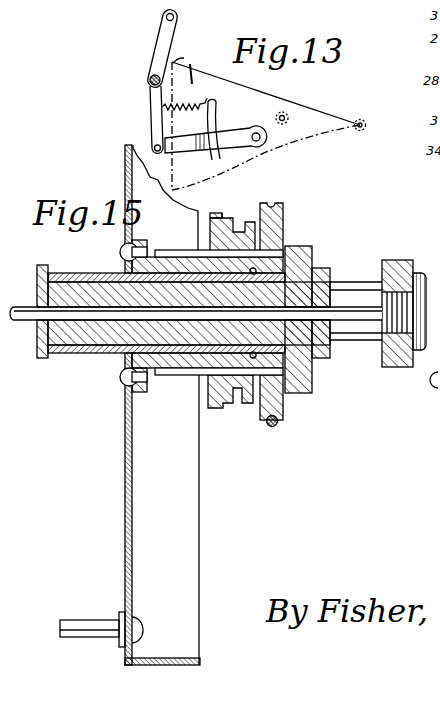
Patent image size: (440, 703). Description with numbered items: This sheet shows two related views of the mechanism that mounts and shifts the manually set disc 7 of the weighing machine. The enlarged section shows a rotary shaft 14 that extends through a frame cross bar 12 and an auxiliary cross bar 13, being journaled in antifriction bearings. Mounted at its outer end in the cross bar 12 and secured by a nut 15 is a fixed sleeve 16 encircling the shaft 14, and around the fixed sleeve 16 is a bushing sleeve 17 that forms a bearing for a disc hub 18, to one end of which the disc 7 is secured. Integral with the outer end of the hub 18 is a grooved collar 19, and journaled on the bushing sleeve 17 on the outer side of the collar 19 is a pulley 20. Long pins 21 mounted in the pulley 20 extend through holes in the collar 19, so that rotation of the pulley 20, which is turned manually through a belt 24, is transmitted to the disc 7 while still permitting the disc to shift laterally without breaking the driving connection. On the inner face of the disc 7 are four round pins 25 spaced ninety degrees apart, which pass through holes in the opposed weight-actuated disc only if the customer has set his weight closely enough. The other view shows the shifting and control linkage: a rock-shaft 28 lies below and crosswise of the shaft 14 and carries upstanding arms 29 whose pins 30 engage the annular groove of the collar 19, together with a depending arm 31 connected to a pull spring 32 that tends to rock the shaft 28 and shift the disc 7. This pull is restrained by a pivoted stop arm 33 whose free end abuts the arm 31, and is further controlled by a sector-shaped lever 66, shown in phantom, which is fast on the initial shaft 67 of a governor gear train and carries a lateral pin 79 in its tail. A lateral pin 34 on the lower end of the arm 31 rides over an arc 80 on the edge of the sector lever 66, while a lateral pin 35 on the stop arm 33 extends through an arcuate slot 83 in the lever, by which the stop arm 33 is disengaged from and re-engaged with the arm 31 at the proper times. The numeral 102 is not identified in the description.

In FIG. 15, the manually set disc 7 is at (125, 431).
In FIG. 15, the cross bar 12 is at (300, 255).
In FIG. 15, the auxiliary cross bar 13 is at (400, 262).
In FIG. 15, the rotary shaft 14 is at (17, 306).
In FIG. 15, the nut 15 is at (322, 270).
In FIG. 15, the fixed sleeve 16 is at (66, 290).
In FIG. 15, the bushing sleeve 17 is at (96, 276).
In FIG. 15, the disc hub 18 is at (163, 262).
In FIG. 15, the grooved collar 19 is at (230, 226).
In FIG. 15, the pulley 20 is at (284, 217).
In FIG. 15, the long pins 21 is at (190, 249).
In FIG. 15, the belt 24 is at (275, 426).
In FIG. 15, the round pins 25 is at (80, 622).
In FIG. 13, the rock-shaft 28 is at (149, 80).
In FIG. 13, the upstanding arms 29 is at (162, 41).
In FIG. 13, the pins 30 is at (164, 17).
In FIG. 13, the depending arm 31 is at (150, 99).
In FIG. 13, the pull spring 32 is at (201, 79).
In FIG. 13, the pivoted stop arm 33 is at (186, 140).
In FIG. 13, the lateral pin 34 is at (152, 144).
In FIG. 13, the lateral pin 35 is at (219, 128).
In FIG. 13, the sector-shaped lever 66 is at (263, 86).
In FIG. 13, the initial shaft 67 is at (287, 114).
In FIG. 13, the lateral pin 79 is at (364, 120).
In FIG. 13, the arc 80 is at (187, 54).
In FIG. 13, the arcuate slot 83 is at (208, 100).
In FIG. 15, the hub tip 102 is at (219, 203).